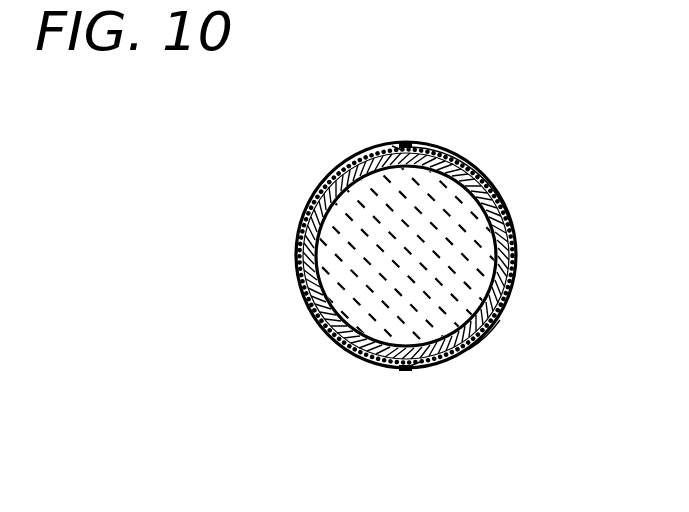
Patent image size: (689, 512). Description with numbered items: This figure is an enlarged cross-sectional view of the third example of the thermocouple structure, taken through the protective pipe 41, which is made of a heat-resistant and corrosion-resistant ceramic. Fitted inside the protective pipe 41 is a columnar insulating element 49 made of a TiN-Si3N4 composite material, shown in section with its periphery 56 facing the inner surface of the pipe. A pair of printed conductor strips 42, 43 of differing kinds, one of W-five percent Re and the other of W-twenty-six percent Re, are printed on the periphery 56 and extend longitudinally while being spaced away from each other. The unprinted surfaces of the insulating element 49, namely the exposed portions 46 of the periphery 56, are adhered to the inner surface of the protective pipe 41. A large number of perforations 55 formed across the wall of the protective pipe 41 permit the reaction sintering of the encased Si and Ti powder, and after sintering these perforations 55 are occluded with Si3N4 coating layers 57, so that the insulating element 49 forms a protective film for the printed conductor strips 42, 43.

The protective pipe 41 is at (502, 200).
The printed conductor strip 42 is at (330, 178).
The printed conductor strip 43 is at (468, 350).
The exposed portions 46 is at (510, 267).
The insulating element 49 is at (378, 293).
The perforations 55 is at (408, 142).
The periphery 56 is at (303, 215).
The coating layers 57 is at (397, 142).